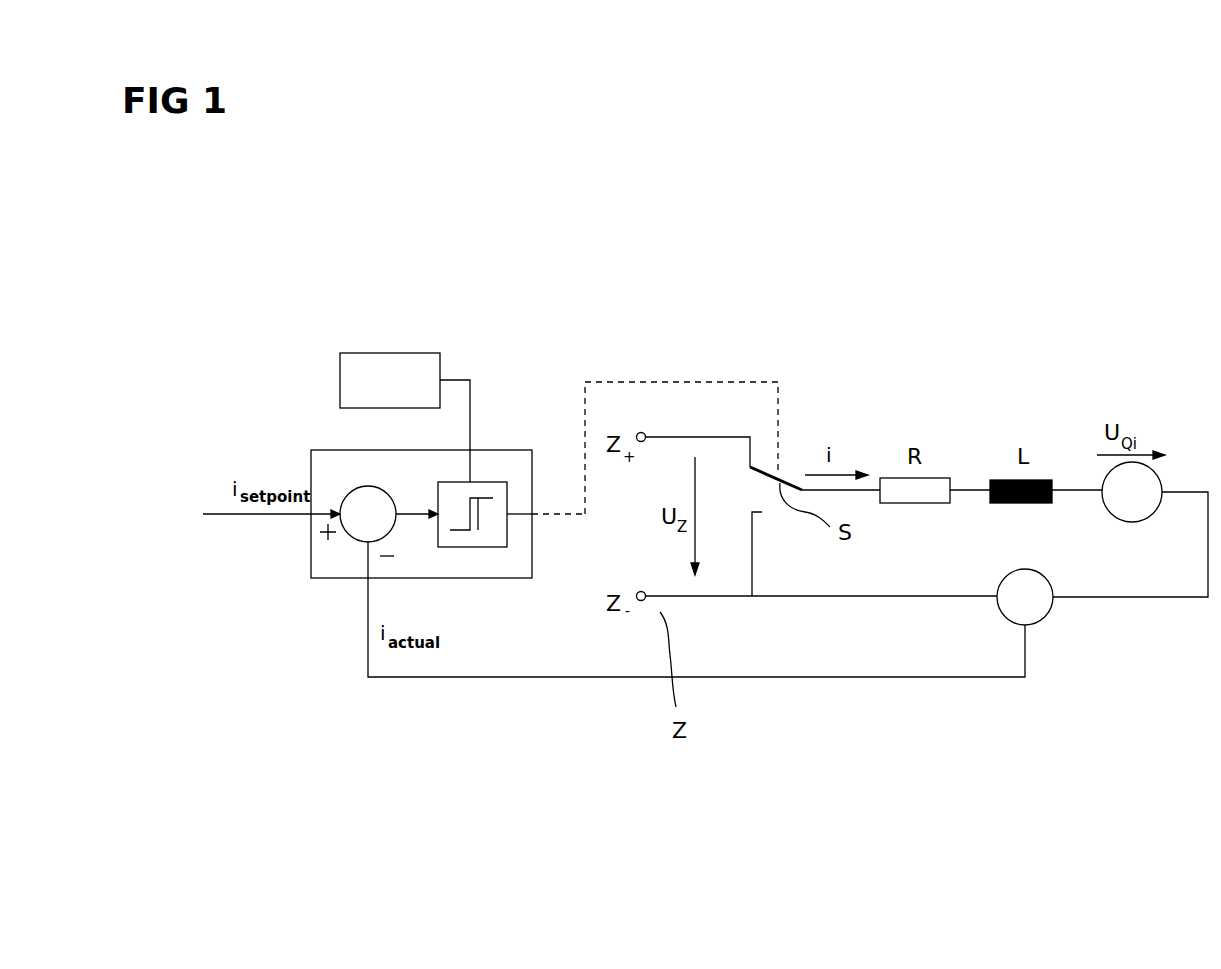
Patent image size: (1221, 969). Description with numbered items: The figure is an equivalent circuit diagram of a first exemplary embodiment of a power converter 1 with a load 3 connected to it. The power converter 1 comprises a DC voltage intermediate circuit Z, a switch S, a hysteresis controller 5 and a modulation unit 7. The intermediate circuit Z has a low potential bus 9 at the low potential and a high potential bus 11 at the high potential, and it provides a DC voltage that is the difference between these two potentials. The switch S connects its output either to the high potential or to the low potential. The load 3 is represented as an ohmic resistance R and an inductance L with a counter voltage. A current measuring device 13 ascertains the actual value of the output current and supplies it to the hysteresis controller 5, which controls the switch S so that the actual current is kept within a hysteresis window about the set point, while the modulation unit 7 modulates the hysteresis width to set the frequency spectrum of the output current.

The power converter 1 is at (578, 335).
The load 3 is at (1055, 440).
The hysteresis controller 5 is at (448, 578).
The modulation unit 7 is at (382, 353).
The low potential bus 9 is at (684, 598).
The high potential bus 11 is at (685, 434).
The current measuring device 13 is at (1046, 614).